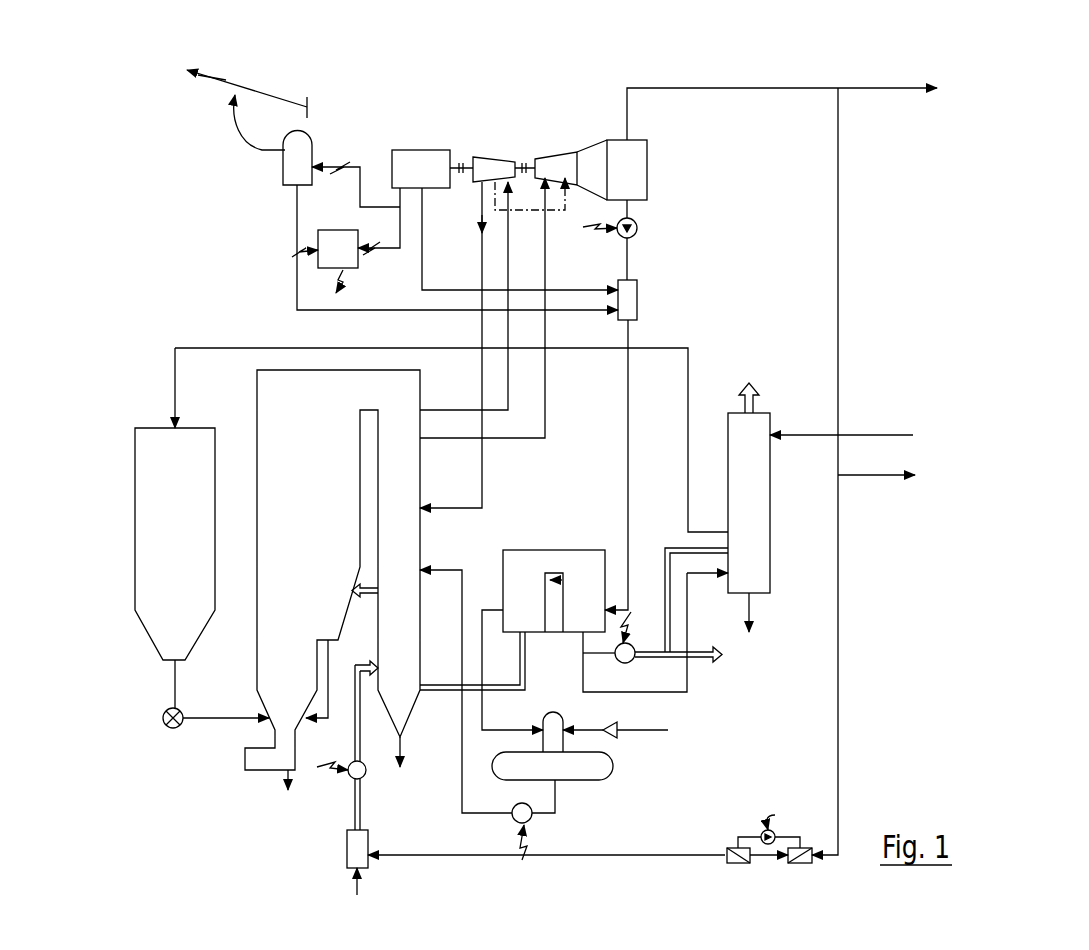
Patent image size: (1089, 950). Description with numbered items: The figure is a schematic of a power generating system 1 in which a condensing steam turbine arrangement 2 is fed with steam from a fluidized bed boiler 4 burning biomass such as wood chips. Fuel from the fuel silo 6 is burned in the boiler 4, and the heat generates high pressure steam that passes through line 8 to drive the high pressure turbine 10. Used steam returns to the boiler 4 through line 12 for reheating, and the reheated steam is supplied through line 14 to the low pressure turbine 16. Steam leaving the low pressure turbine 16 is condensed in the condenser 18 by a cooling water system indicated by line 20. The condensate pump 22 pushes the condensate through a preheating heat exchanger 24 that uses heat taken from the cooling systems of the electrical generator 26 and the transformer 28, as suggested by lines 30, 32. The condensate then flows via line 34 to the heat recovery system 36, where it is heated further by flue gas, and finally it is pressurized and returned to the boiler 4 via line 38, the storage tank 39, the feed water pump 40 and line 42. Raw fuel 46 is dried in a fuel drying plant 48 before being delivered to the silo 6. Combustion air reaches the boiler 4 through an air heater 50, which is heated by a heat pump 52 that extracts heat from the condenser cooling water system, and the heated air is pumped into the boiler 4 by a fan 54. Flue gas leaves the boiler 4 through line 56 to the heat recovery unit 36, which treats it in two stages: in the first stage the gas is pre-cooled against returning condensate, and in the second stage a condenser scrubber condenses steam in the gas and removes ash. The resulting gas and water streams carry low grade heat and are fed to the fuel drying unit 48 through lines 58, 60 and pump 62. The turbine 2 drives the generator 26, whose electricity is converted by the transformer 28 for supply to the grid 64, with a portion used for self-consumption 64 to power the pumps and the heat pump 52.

The power generating system 1 is at (113, 365).
The condensing steam turbine arrangement 2 is at (527, 97).
The boiler 4 is at (257, 405).
The fuel silo 6 is at (135, 478).
The line 8 is at (450, 410).
The high pressure turbine 10 is at (475, 158).
The line 12 is at (455, 508).
The line 14 is at (545, 401).
The low pressure turbine 16 is at (597, 137).
The condenser 18 is at (650, 140).
The line 20 is at (722, 89).
The condensate pump 22 is at (634, 221).
The preheating heat exchanger 24 is at (637, 318).
The electrical generator 26 is at (392, 160).
The transformer 28 is at (283, 184).
The line 30 is at (422, 256).
The line 32 is at (375, 310).
The line 34 is at (628, 468).
The heat recovery system 36 is at (595, 550).
The line 38 is at (482, 677).
The storage tank 39 is at (613, 766).
The feed water pump 40 is at (514, 806).
The line 42 is at (462, 728).
The raw fuel 46 is at (890, 372).
The fuel drying plant 48 is at (728, 465).
The air heater 50 is at (370, 870).
The heat pump 52 is at (735, 865).
The fan 54 is at (366, 777).
The line 56 is at (440, 685).
The line 58 is at (655, 598).
The line 60 is at (687, 680).
The pump 62 is at (627, 664).
The grid 64 is at (274, 97).